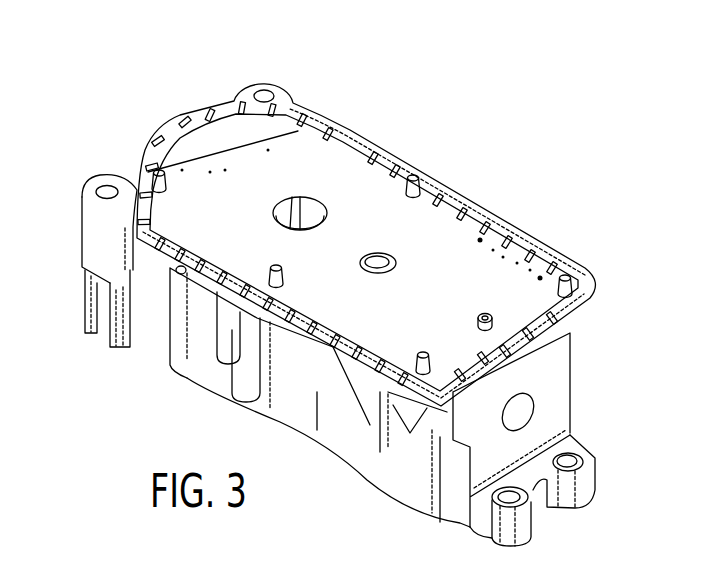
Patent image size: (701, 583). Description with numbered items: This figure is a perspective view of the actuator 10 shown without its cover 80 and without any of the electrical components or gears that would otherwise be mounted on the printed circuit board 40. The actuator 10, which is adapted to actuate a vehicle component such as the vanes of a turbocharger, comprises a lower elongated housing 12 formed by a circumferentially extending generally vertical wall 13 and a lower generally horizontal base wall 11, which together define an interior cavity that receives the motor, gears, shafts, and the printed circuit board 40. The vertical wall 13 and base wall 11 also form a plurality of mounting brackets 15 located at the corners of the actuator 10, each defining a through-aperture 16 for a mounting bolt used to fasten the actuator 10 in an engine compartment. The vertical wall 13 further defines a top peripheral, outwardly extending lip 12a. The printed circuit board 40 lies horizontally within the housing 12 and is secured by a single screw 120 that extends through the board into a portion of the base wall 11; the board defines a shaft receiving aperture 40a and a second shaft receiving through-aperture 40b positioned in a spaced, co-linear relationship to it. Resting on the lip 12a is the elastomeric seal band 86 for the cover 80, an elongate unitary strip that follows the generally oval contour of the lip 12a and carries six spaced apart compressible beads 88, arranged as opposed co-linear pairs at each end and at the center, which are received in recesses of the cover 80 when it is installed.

The actuator 10 is at (468, 135).
The base wall 11 is at (350, 465).
The lower elongated housing 12 is at (186, 388).
The lip 12a is at (186, 268).
The vertical wall 13 is at (213, 360).
The mounting bracket 15 is at (236, 96).
The through-aperture 16 is at (264, 91).
The printed circuit board 40 is at (484, 270).
The shaft receiving aperture 40a is at (389, 252).
The second shaft receiving through-aperture 40b is at (318, 198).
The cover 80 is at (271, 573).
The seal band 86 is at (478, 195).
The bead 88 is at (166, 170).
The screw 120 is at (563, 337).